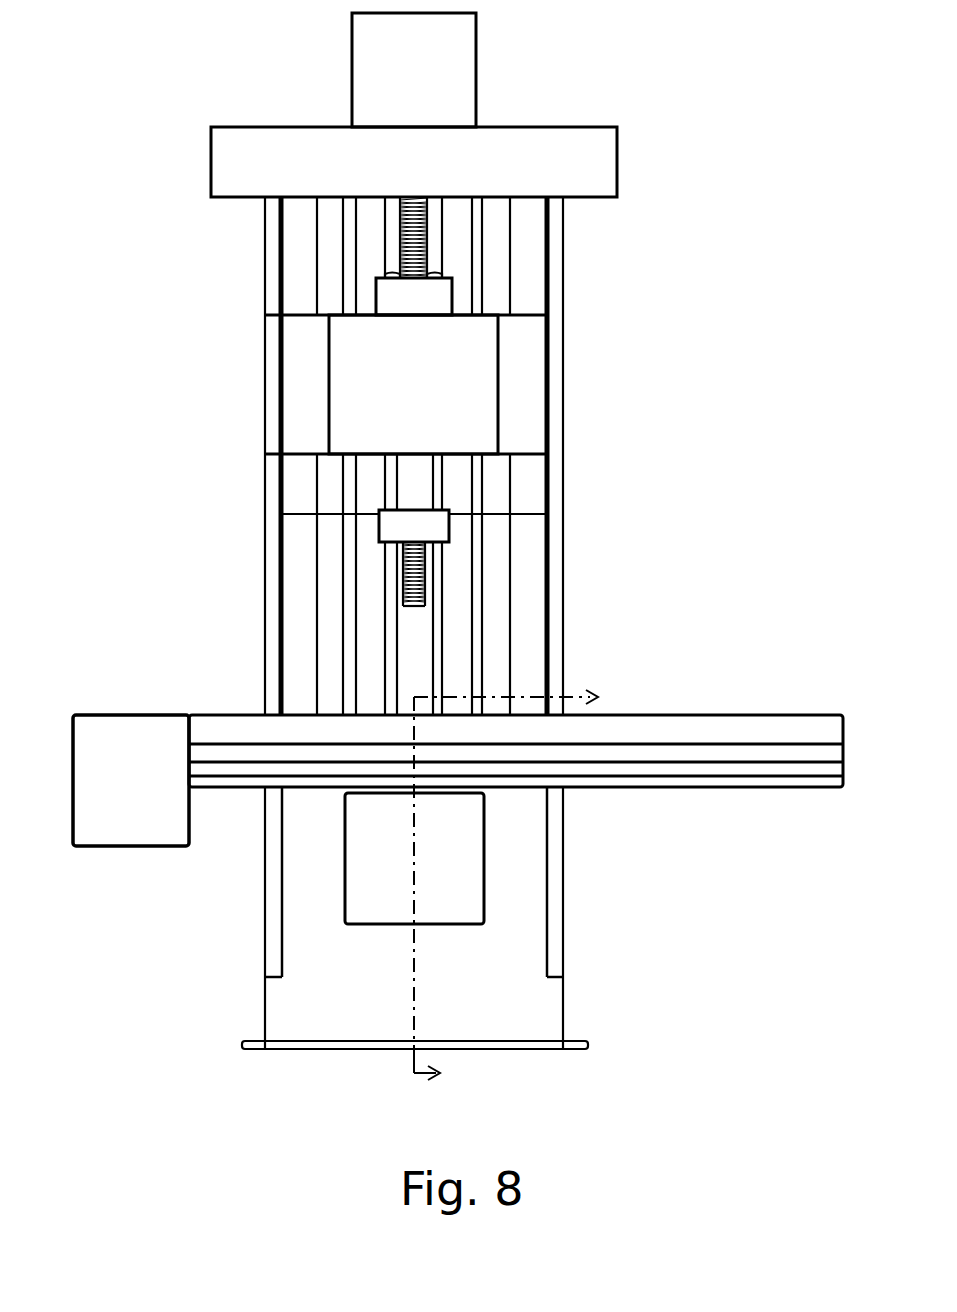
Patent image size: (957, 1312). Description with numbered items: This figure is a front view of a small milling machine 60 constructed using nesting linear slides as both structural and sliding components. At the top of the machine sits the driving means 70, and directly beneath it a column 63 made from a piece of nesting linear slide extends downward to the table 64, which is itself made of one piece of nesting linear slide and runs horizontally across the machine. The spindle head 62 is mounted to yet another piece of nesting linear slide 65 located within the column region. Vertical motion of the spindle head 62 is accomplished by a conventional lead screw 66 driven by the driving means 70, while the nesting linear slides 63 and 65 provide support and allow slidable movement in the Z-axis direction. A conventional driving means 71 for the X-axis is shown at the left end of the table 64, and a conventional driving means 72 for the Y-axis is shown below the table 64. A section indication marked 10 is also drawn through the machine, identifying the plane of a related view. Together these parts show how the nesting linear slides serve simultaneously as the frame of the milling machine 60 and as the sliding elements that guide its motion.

The milling machine 60 is at (196, 346).
The driving means 70 is at (400, 98).
The column 63 is at (524, 663).
The nesting linear slide 65 is at (533, 493).
The lead screw 66 is at (432, 262).
The spindle head 62 is at (472, 397).
The table 64 is at (658, 787).
The driving means for the X-axis 71 is at (117, 743).
The driving means for the Y-axis 72 is at (460, 893).
The section line 10 is at (524, 885).